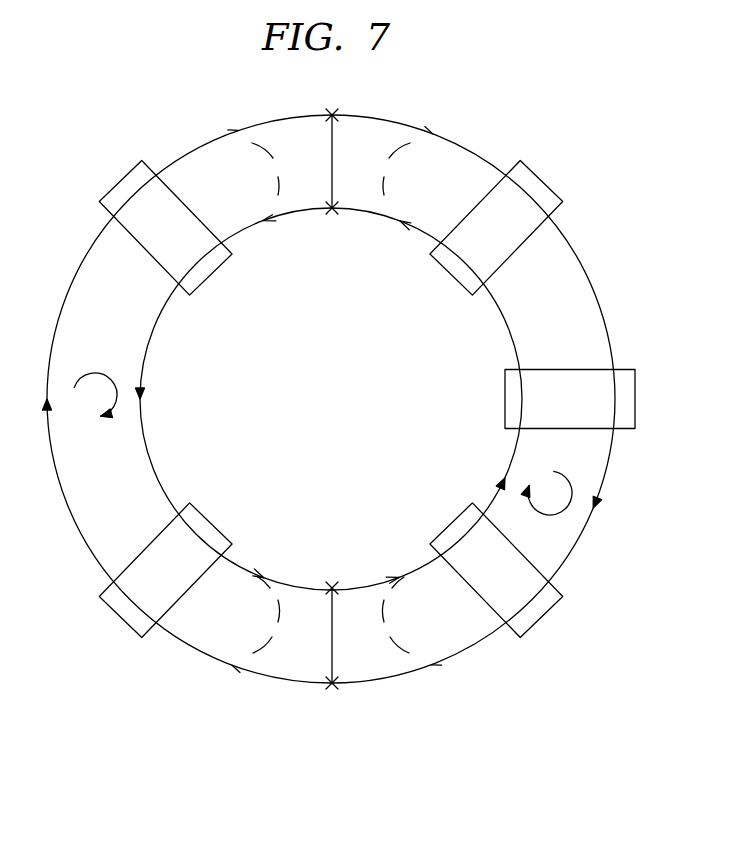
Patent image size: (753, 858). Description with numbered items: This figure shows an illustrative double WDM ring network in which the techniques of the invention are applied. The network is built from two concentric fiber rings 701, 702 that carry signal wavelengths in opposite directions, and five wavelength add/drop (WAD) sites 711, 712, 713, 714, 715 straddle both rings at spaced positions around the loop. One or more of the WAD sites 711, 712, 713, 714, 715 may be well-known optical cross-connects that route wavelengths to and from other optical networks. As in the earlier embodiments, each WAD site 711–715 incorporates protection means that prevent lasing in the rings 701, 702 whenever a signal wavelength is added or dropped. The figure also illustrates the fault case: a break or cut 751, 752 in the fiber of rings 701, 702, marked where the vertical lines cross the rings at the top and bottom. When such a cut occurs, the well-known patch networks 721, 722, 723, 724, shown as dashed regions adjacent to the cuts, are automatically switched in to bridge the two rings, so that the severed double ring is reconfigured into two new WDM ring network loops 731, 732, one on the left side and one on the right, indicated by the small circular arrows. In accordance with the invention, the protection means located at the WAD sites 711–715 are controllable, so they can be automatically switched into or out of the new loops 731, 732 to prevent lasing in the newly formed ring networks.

The ring 701 is at (510, 328).
The ring 702 is at (600, 297).
The WAD site 711 is at (122, 180).
The WAD site 712 is at (118, 616).
The WAD site 713 is at (545, 618).
The WAD site 714 is at (638, 401).
The WAD site 715 is at (545, 172).
The patch network 721 is at (254, 169).
The patch network 722 is at (409, 169).
The patch network 723 is at (255, 615).
The patch network 724 is at (409, 615).
The new WDM ring network loop 731 is at (95, 412).
The new WDM ring network loop 732 is at (552, 480).
The break or cut 751 is at (332, 216).
The break or cut 752 is at (332, 582).